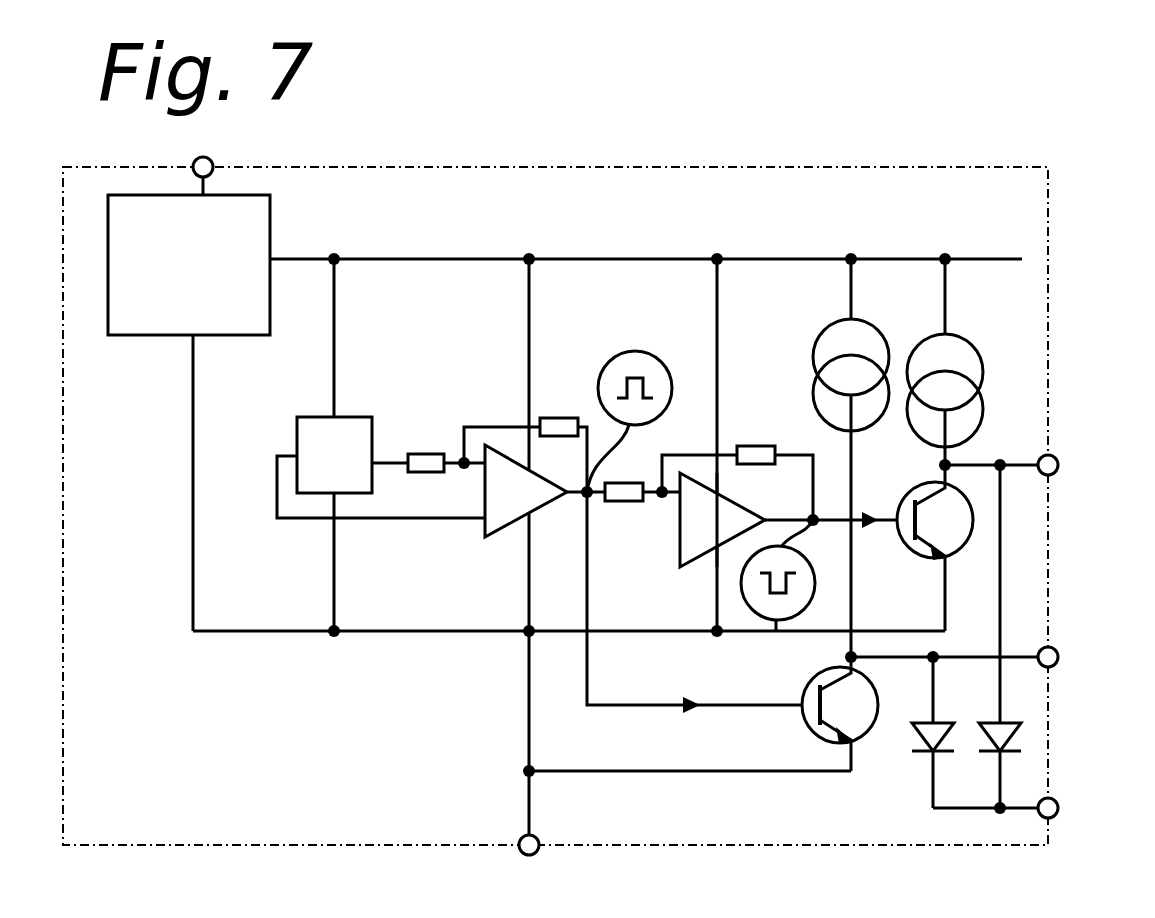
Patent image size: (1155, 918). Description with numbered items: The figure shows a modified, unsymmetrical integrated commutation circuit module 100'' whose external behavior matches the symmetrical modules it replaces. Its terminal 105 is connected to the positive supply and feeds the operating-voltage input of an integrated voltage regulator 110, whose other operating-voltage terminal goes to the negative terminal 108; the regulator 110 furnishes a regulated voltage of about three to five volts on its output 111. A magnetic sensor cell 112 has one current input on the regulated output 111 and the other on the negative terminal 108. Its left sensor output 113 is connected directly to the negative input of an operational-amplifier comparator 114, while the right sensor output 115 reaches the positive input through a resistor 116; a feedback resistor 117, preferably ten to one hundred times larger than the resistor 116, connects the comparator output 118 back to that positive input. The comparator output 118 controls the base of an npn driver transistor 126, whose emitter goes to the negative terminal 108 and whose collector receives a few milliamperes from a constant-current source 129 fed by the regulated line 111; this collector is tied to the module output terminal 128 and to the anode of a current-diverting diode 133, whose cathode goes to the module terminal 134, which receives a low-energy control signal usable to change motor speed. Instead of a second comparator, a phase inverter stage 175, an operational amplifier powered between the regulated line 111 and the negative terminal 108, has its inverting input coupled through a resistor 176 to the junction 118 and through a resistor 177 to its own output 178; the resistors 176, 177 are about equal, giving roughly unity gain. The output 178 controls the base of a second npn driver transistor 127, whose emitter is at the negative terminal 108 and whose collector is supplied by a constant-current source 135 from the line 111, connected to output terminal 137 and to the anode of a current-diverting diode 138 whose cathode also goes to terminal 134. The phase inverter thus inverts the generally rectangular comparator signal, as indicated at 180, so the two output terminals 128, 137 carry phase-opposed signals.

The integrated commutation circuit module 100'' is at (562, 488).
The terminal 105 is at (213, 167).
The negative terminal 108 is at (538, 852).
The voltage regulator 110 is at (218, 276).
The regulated-voltage output 111 is at (750, 259).
The Hall cell 112 is at (350, 417).
The left Hall output 113 is at (298, 455).
The operational-amplifier comparator 114 is at (538, 504).
The right Hall output 115 is at (374, 466).
The resistor 116 is at (422, 453).
The feedback resistor 117 is at (558, 414).
The comparator output 118 is at (586, 495).
The npn driver transistor 126 is at (803, 704).
The npn driver transistor 127 is at (932, 558).
The module output terminal 128 is at (1055, 650).
The constant-current source 129 is at (870, 322).
The current-diverting diode 133 is at (944, 722).
The module terminal 134 is at (1055, 800).
The constant-current source 135 is at (962, 336).
The output terminal 137 is at (1040, 458).
The current-diverting diode 138 is at (988, 755).
The phase inverter stage 175 is at (700, 562).
The resistor 176 is at (626, 503).
The resistor 177 is at (752, 443).
The phase inverter output 178 is at (808, 518).
The inverted signal 180 is at (782, 618).